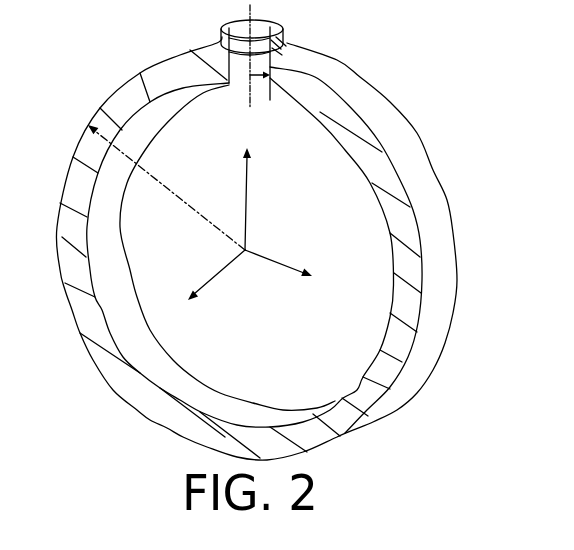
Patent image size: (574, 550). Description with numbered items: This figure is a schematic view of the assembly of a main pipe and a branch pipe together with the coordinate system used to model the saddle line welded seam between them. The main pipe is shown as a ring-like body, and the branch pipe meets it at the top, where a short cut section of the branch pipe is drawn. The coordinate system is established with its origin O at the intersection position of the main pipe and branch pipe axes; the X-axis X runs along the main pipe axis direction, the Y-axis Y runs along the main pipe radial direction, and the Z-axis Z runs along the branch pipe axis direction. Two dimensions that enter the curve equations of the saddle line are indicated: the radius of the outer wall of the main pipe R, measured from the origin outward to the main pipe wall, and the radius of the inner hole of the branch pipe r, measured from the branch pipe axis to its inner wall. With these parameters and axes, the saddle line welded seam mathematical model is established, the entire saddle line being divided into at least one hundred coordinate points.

The radius of outer wall of main pipe R is at (152, 180).
The radius of inner hole of branch pipe r is at (260, 88).
The origin O is at (257, 246).
The X-axis X is at (209, 278).
The Y-axis Y is at (285, 274).
The Z-axis Z is at (257, 199).